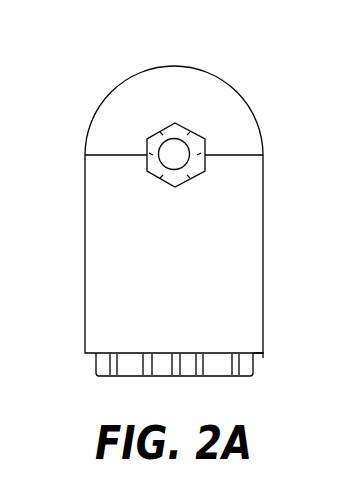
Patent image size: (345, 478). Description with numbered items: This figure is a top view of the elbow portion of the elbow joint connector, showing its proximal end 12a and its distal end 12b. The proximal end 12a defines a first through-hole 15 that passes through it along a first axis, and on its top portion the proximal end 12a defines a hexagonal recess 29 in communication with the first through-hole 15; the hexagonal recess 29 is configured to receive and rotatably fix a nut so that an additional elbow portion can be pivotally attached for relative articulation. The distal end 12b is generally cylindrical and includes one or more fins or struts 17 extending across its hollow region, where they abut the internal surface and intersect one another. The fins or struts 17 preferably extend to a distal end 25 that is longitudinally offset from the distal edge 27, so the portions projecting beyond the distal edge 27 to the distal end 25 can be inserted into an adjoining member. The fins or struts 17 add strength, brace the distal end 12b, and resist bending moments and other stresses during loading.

The proximal end 12a is at (172, 83).
The distal end 12b is at (98, 346).
The first through-hole 15 is at (173, 154).
The hexagonal recess 29 is at (194, 142).
The fins or struts 17 is at (254, 370).
The distal end of fins/struts 25 is at (207, 377).
The distal edge 27 is at (261, 359).